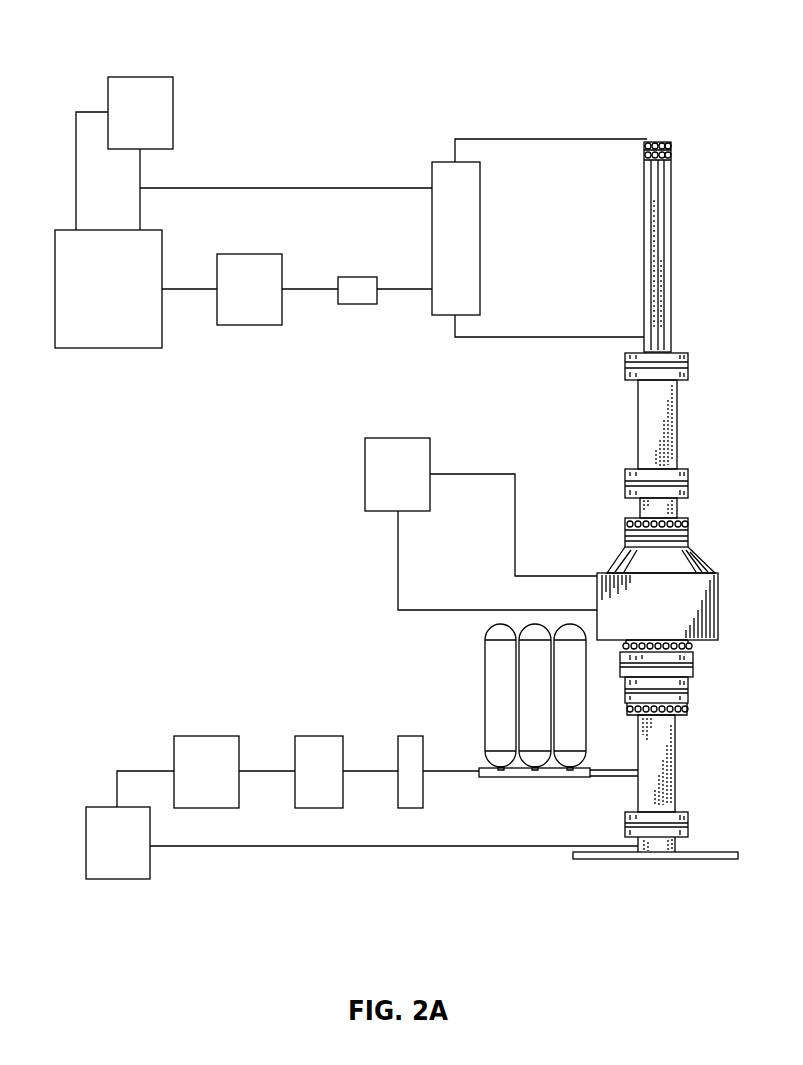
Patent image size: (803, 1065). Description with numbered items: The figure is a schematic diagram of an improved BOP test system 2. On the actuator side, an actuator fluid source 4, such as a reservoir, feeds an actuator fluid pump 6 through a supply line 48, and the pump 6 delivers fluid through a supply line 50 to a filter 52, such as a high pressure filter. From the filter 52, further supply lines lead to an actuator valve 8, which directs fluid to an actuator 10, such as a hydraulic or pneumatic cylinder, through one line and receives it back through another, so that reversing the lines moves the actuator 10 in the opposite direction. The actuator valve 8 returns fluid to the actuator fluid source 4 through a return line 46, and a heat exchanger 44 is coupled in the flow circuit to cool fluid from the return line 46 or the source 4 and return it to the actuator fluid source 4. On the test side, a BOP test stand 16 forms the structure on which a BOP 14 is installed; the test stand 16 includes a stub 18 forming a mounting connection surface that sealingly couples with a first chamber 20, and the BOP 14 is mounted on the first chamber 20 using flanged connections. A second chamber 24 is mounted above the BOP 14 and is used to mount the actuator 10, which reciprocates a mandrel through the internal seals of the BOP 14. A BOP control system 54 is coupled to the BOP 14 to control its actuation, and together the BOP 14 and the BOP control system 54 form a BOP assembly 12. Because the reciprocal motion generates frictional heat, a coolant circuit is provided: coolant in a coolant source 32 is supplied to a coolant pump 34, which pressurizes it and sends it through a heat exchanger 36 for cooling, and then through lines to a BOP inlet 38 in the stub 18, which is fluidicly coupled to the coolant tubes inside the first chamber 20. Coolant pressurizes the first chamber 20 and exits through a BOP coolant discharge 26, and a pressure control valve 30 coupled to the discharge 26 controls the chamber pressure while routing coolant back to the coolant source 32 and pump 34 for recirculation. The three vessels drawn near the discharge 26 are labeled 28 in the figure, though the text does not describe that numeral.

The BOP test system 2 is at (677, 48).
The actuator fluid source 4 is at (76, 230).
The actuator fluid pump 6 is at (235, 254).
The actuator valve 8 is at (480, 237).
The actuator 10 is at (644, 232).
The BOP assembly 12 is at (312, 582).
The BOP 14 is at (718, 608).
The BOP test stand 16 is at (697, 862).
The stub 18 is at (688, 832).
The first chamber 20 is at (675, 757).
The second chamber 24 is at (638, 428).
The BOP coolant discharge 26 is at (517, 777).
The gas cylinders 28 is at (485, 695).
The pressure control valve 30 is at (410, 736).
The coolant source 32 is at (320, 736).
The coolant pump 34 is at (207, 736).
The heat exchanger 36 is at (115, 807).
The BOP inlet 38 is at (637, 845).
The heat exchanger 44 is at (140, 77).
The return line 46 is at (288, 188).
The supply line 48 is at (212, 289).
The supply line 50 is at (328, 289).
The filter 52 is at (358, 277).
The BOP control system 54 is at (397, 438).